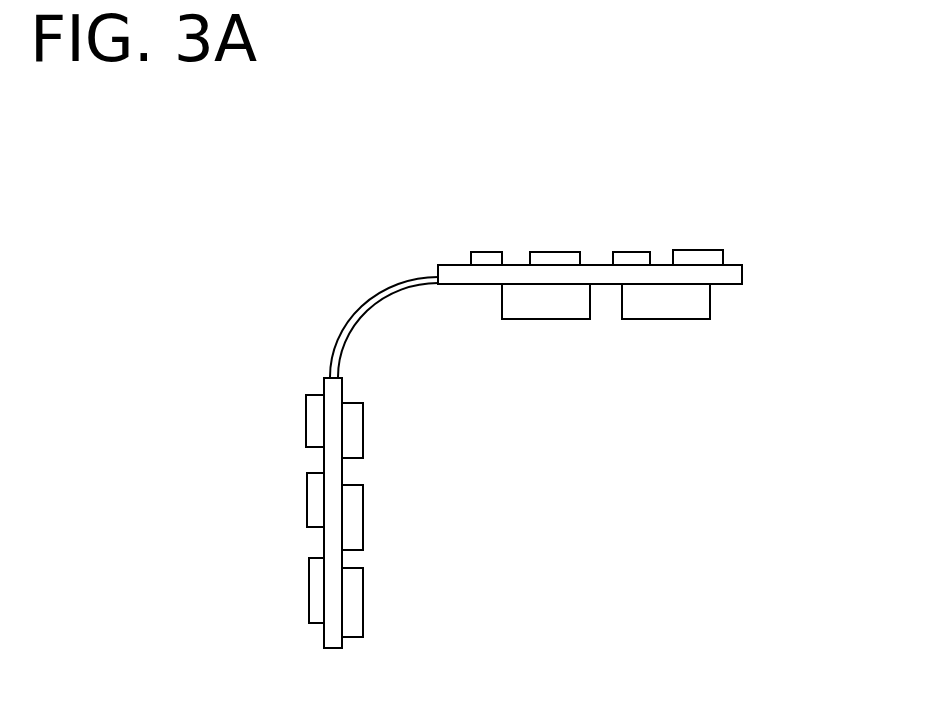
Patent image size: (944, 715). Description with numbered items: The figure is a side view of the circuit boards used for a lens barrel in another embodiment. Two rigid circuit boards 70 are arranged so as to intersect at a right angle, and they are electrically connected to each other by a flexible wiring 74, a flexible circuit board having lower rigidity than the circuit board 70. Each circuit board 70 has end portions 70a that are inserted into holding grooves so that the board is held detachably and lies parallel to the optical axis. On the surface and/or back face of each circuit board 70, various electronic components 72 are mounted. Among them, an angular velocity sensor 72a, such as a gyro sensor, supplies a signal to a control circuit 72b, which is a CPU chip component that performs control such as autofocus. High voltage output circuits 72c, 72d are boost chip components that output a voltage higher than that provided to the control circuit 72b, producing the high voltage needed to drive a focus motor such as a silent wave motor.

The circuit board 70 is at (590, 266).
The end portion of circuit board 70a is at (453, 272).
The electronic component 72 is at (697, 258).
The angular velocity sensor 72a is at (558, 258).
The control circuit 72b is at (320, 590).
The high voltage output circuit 72c is at (522, 303).
The high voltage output circuit 72d is at (697, 302).
The flexible wiring 74 is at (378, 298).